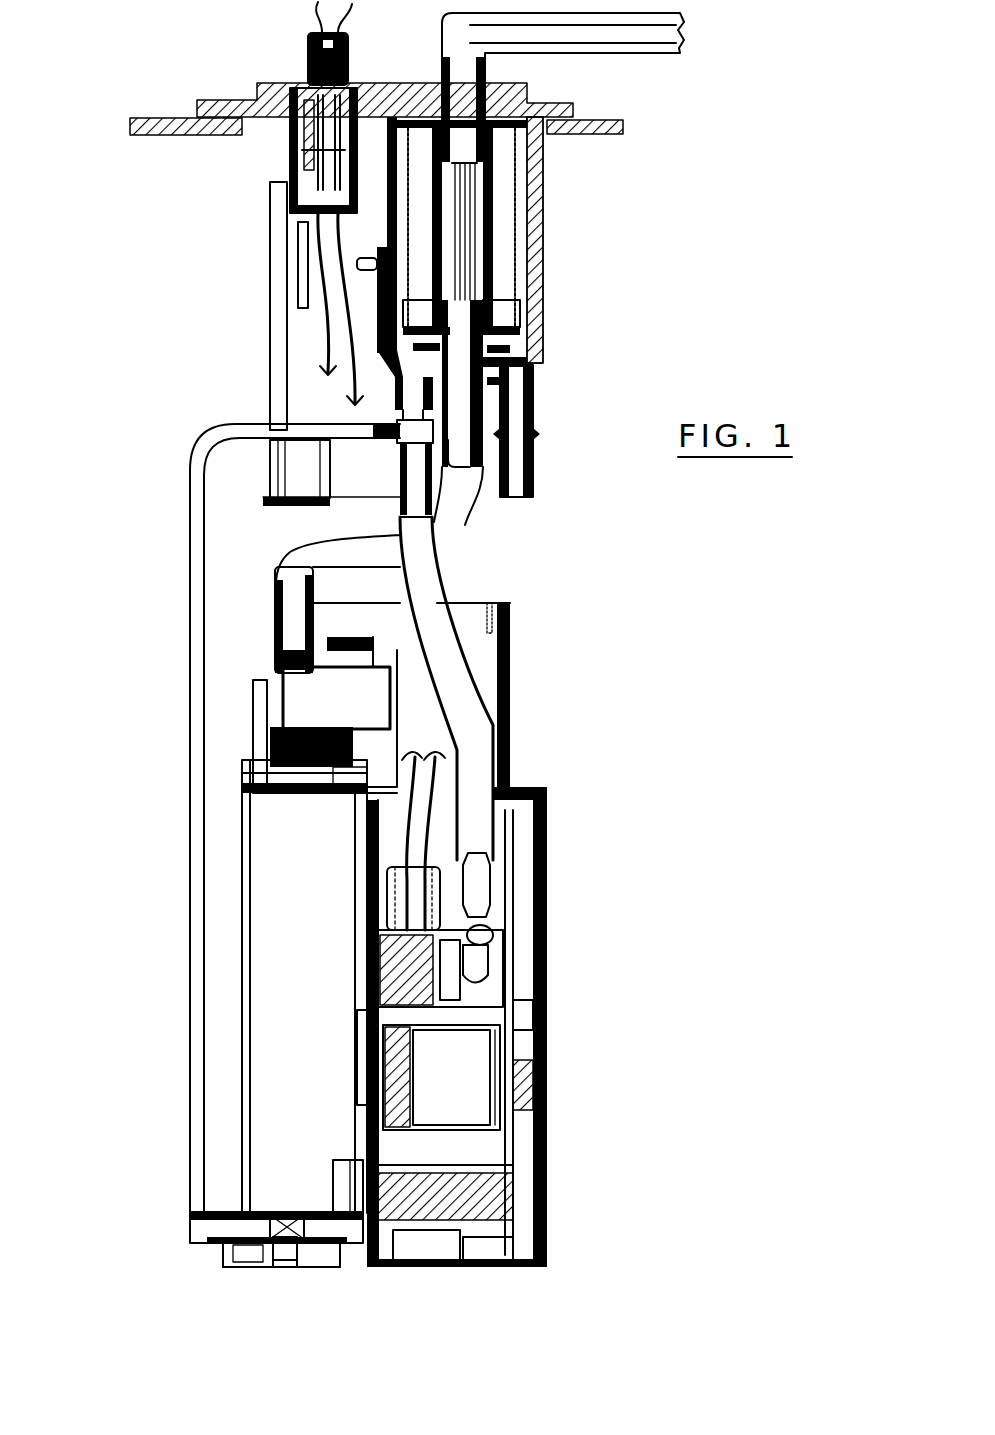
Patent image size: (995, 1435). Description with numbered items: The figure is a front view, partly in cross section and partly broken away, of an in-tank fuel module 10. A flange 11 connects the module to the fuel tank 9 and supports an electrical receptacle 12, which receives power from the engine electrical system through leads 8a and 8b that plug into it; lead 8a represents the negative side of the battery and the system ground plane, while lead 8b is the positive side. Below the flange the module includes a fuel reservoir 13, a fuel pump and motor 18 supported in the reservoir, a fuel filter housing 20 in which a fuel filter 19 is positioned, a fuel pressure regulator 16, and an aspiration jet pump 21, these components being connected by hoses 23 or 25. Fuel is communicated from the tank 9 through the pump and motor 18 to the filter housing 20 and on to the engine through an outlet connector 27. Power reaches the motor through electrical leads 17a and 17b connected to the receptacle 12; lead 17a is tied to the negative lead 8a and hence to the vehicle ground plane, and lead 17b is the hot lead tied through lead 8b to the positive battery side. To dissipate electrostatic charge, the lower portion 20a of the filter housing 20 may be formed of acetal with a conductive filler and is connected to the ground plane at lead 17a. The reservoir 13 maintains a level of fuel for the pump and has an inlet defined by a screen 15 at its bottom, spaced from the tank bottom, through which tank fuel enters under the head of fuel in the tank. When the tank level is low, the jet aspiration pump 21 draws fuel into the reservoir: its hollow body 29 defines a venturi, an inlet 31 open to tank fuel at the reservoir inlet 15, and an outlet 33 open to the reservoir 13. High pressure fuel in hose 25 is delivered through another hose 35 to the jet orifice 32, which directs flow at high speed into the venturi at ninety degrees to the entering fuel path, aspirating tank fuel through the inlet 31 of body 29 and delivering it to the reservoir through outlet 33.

The lead 8a is at (318, 8).
The lead 8b is at (356, 30).
The fuel tank 9 is at (142, 137).
The module 10 is at (651, 263).
The flange 11 is at (568, 105).
The electrical receptacle 12 is at (300, 160).
The fuel reservoir 13 is at (315, 961).
The screen 15 is at (245, 1270).
The fuel pressure regulator 16 is at (352, 718).
The electrical lead 17a is at (322, 318).
The electrical lead 17b is at (352, 388).
The fuel pump and motor 18 is at (505, 935).
The fuel filter 19 is at (512, 215).
The fuel filter housing 20 is at (540, 178).
The lower portion of filter housing 20a is at (552, 256).
The aspiration jet pump 21 is at (168, 1208).
The hose 23 is at (455, 667).
The hose 25 is at (470, 533).
The outlet connector 27 is at (690, 40).
The body 29 is at (263, 1210).
The inlet 31 is at (245, 1275).
The jet orifice 32 is at (300, 1207).
The outlet 33 is at (352, 1165).
The hose 35 is at (208, 580).